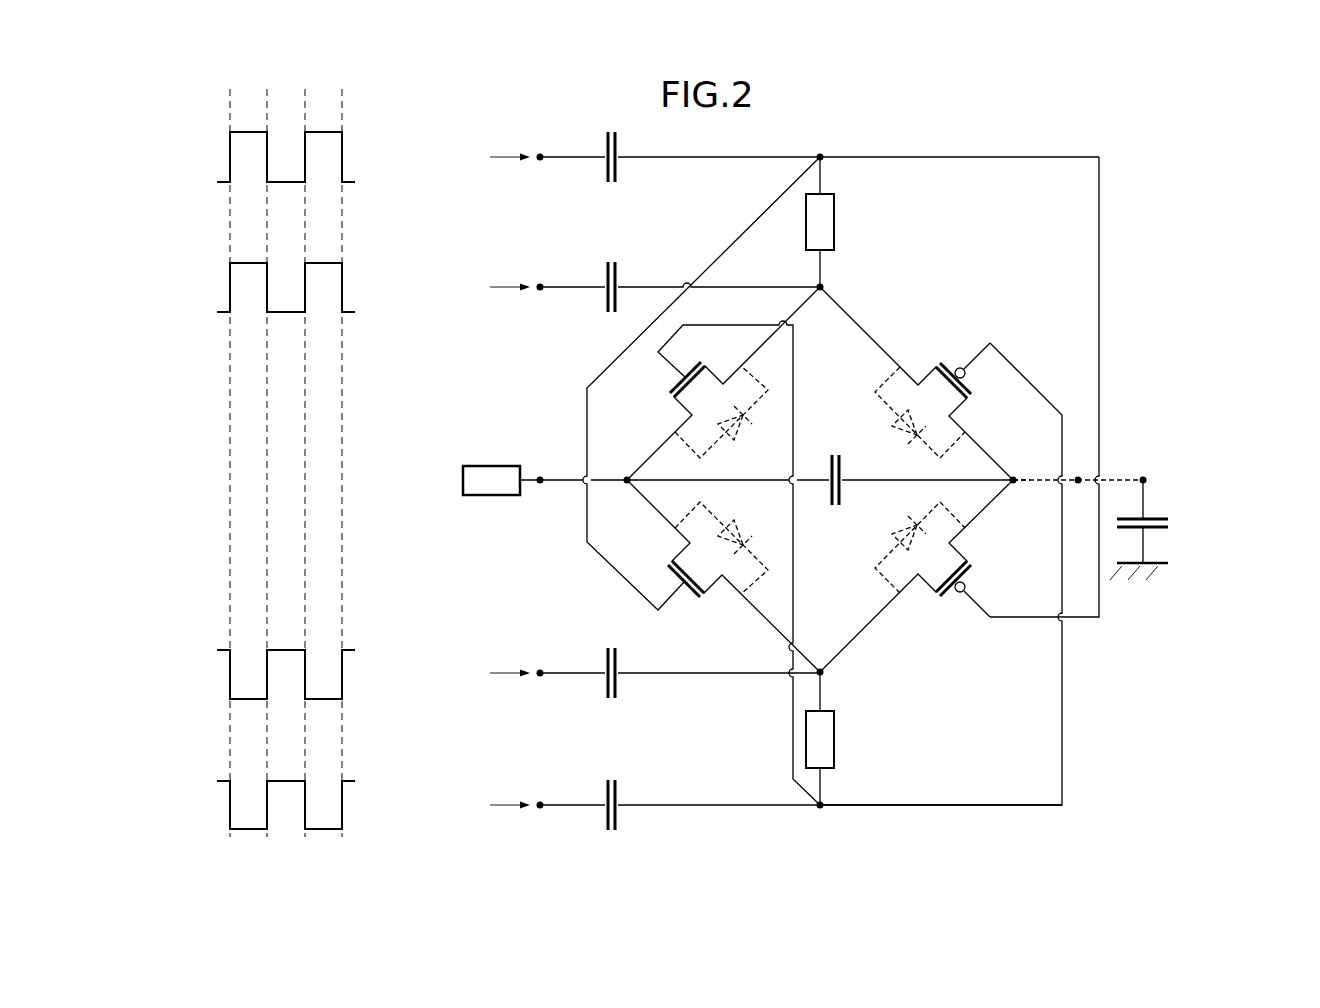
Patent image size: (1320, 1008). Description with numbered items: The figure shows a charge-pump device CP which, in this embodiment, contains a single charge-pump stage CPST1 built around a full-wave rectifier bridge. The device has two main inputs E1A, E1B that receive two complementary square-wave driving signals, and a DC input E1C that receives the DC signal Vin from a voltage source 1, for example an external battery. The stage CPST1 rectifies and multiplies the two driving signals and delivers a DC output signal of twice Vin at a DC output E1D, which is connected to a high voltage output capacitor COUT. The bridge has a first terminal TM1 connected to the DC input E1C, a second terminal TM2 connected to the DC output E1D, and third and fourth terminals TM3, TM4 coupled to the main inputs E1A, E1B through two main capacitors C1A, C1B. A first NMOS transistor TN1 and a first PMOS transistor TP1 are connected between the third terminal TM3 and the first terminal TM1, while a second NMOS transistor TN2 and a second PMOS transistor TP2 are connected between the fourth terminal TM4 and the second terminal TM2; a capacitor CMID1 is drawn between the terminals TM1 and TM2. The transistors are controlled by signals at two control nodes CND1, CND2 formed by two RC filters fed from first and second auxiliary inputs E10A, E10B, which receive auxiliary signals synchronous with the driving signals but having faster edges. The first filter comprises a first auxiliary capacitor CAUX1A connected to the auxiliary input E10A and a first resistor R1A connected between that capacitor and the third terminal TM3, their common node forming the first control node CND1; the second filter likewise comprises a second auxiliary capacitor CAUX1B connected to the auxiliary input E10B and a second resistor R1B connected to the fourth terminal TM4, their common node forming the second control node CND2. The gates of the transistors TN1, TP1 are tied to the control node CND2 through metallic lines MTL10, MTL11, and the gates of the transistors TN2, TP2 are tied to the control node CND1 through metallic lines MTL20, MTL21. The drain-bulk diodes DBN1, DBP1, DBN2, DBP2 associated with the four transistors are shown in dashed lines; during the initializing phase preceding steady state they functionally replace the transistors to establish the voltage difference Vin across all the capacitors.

The charge-pump device CP is at (1145, 126).
The charge-pump stage CPST1 is at (1190, 153).
The first auxiliary input E10A is at (541, 153).
The first auxiliary capacitor CAUX1A is at (607, 147).
The first main input E1A is at (541, 283).
The first main capacitor C1A is at (613, 276).
The DC input E1C is at (541, 476).
The voltage source 1 is at (491, 480).
The second main input E1B is at (541, 669).
The second main capacitor C1B is at (613, 664).
The second auxiliary input E10B is at (541, 801).
The second auxiliary capacitor CAUX1B is at (606, 796).
The first control node CND1 is at (821, 153).
The second control node CND2 is at (821, 809).
The first resistor R1A is at (835, 222).
The second resistor R1B is at (835, 740).
The first terminal TM1 is at (627, 476).
The second terminal TM2 is at (1014, 476).
The third terminal TM3 is at (824, 287).
The fourth terminal TM4 is at (824, 672).
The DC output E1D is at (1016, 484).
The first NMOS transistor TN1 is at (668, 398).
The second NMOS transistor TN2 is at (691, 604).
The first PMOS transistor TP1 is at (951, 361).
The second PMOS transistor TP2 is at (951, 604).
The drain-bulk diode DBN1 is at (762, 426).
The drain-bulk diode DBN2 is at (762, 534).
The drain-bulk diode DBP1 is at (898, 431).
The drain-bulk diode DBP2 is at (898, 529).
The middle capacitor CMID1 is at (820, 468).
The metallic line MTL10 is at (795, 386).
The metallic line MTL11 is at (1063, 740).
The metallic line MTL20 is at (754, 220).
The metallic line MTL21 is at (1100, 222).
The high voltage output capacitor COUT is at (1164, 529).